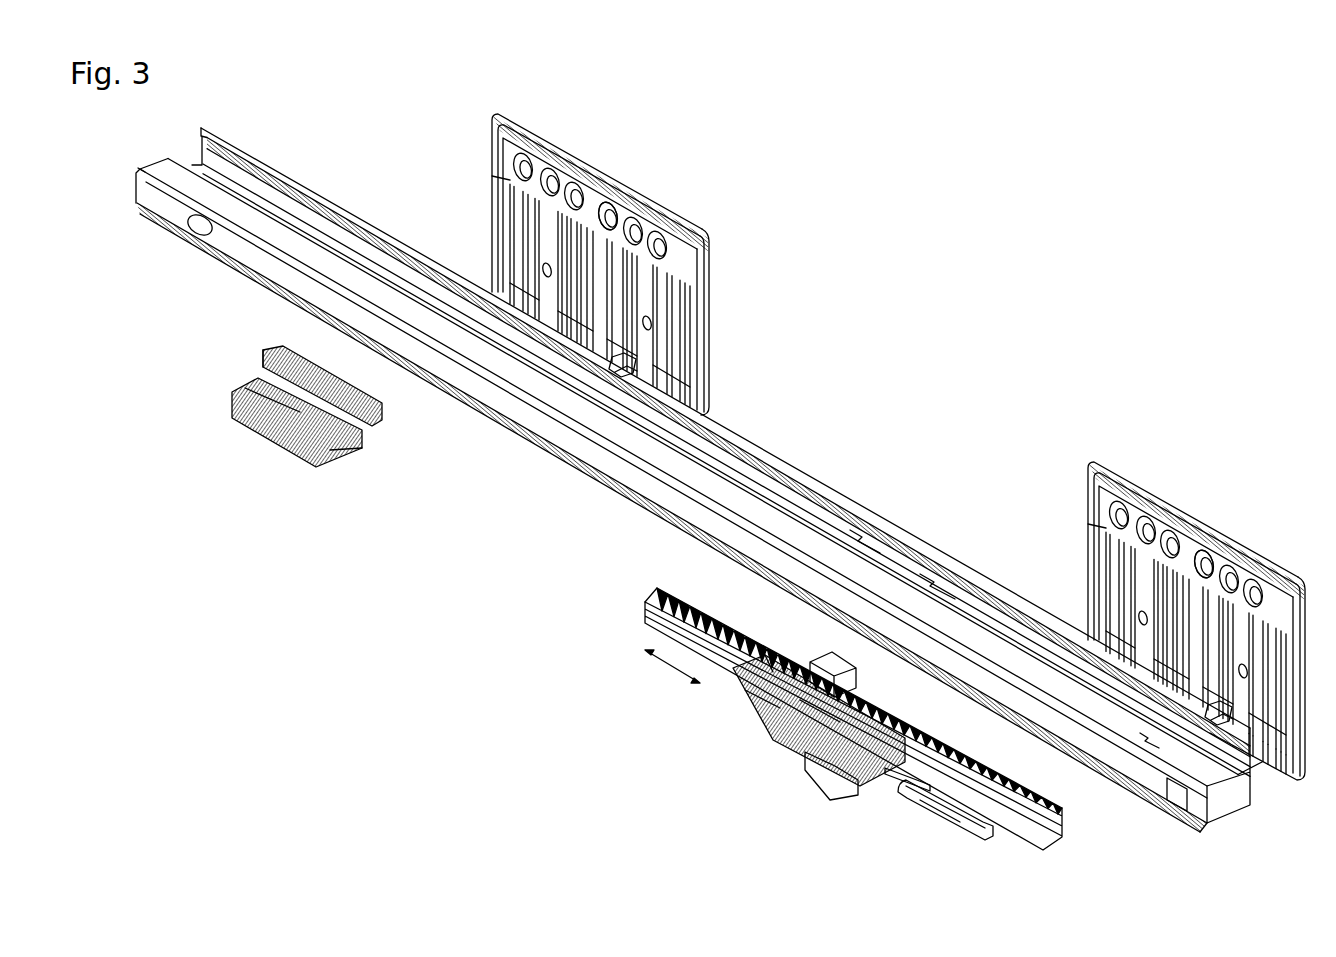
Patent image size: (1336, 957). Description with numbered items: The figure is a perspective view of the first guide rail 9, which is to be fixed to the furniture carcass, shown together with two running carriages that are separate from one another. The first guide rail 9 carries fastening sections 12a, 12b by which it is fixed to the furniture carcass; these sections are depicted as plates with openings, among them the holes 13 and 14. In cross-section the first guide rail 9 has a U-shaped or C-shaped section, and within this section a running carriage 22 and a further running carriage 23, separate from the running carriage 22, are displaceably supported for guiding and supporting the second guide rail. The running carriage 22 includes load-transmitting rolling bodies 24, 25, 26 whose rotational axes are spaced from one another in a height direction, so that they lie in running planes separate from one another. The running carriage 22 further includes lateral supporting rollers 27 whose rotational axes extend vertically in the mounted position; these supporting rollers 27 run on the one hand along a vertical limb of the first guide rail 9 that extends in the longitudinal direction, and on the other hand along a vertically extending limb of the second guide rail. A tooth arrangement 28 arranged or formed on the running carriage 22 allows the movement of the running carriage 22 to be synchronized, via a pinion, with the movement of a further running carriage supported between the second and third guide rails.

The first guide rail 9 is at (560, 467).
The fastening section 12a is at (620, 164).
The fastening section 12b is at (1192, 498).
The fastening hole 13 is at (662, 206).
The fastening hole 14 is at (1253, 560).
The running carriage 22 is at (808, 731).
The further running carriage 23 is at (256, 453).
The load-transmitting rolling body 24 is at (992, 822).
The load-transmitting rolling body 25 is at (788, 728).
The load-transmitting rolling body 26 is at (850, 698).
The lateral supporting roller 27 is at (830, 770).
The tooth arrangement 28 is at (658, 589).